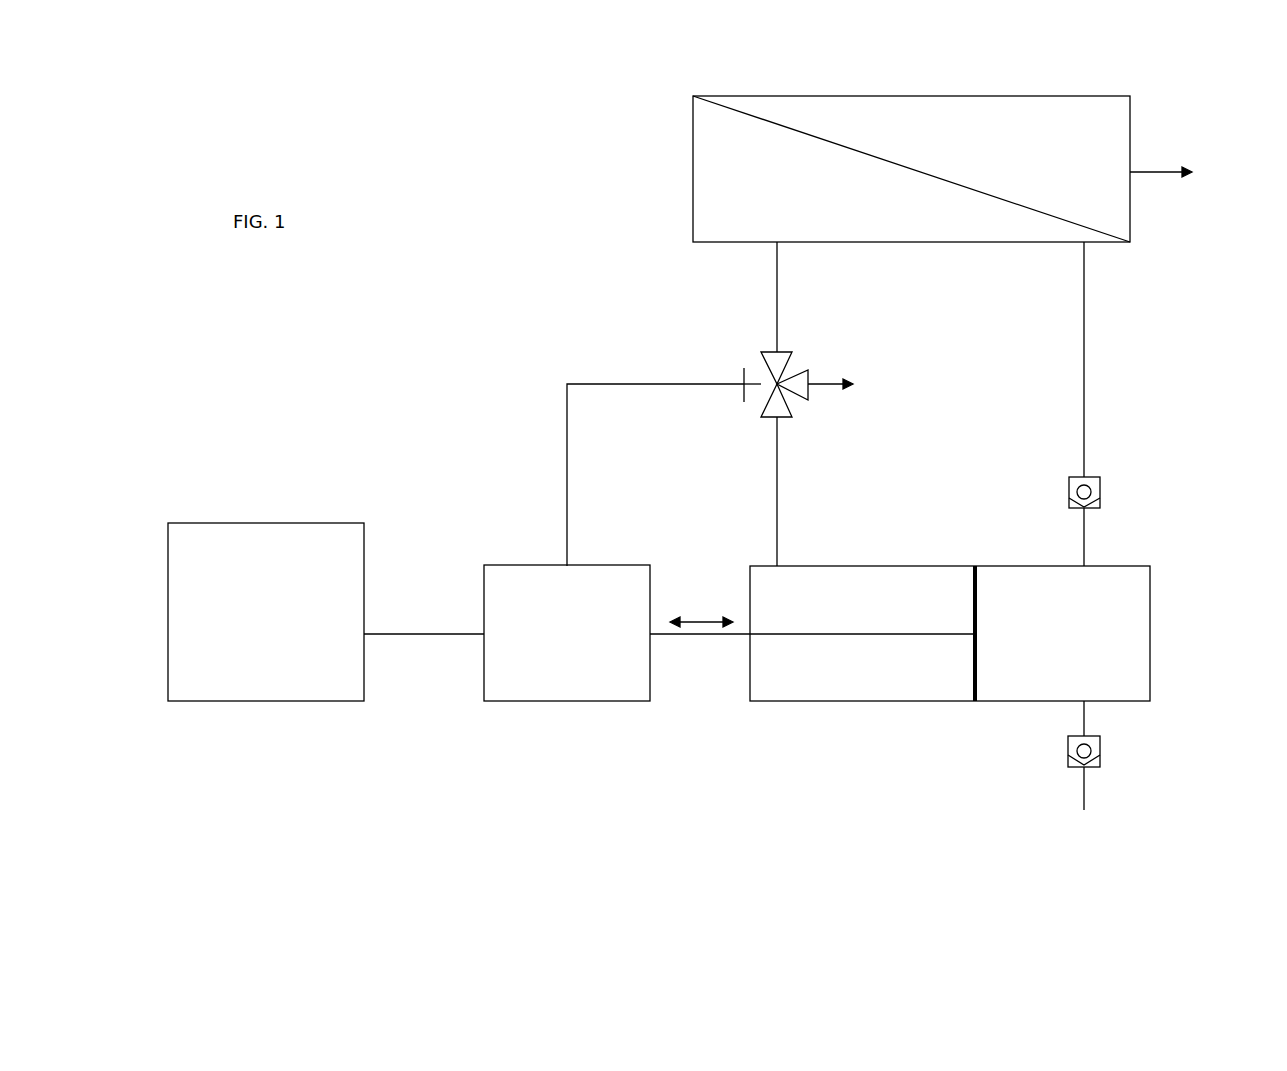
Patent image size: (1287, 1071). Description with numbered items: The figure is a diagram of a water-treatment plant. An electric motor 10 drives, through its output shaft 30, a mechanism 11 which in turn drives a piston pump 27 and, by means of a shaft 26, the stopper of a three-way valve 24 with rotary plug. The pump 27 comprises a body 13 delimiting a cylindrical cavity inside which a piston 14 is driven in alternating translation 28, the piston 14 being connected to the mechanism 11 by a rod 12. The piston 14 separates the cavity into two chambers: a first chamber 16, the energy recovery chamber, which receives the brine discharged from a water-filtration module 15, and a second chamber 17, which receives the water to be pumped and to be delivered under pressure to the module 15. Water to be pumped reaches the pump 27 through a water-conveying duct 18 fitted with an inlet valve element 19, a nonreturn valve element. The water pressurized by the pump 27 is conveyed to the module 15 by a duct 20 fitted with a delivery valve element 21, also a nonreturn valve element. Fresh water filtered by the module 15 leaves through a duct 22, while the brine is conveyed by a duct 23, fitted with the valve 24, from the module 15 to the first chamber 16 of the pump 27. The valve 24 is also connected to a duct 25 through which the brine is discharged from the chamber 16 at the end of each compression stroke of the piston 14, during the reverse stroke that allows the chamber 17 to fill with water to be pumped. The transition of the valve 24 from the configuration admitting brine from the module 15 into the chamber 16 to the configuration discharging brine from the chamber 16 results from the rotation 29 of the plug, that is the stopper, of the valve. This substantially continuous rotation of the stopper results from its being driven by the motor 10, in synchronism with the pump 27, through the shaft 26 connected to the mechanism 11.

The electric motor 10 is at (240, 701).
The mechanism 11 is at (547, 701).
The rod 12 is at (690, 634).
The body 13 is at (815, 701).
The piston 14 is at (972, 651).
The water-filtration module 15 is at (920, 97).
The first chamber 16 is at (863, 612).
The second chamber 17 is at (1052, 612).
The water-conveying duct 18 is at (1084, 720).
The inlet valve element 19 is at (1100, 755).
The duct 20 is at (1084, 453).
The delivery valve element 21 is at (1100, 489).
The duct 22 is at (1162, 174).
The duct 23 is at (777, 300).
The three-way valve 24 is at (796, 369).
The duct 25 is at (822, 386).
The shaft 26 is at (567, 463).
The piston pump 27 is at (1170, 637).
The alternating translation 28 is at (702, 620).
The rotation 29 is at (670, 407).
The output shaft 30 is at (415, 634).